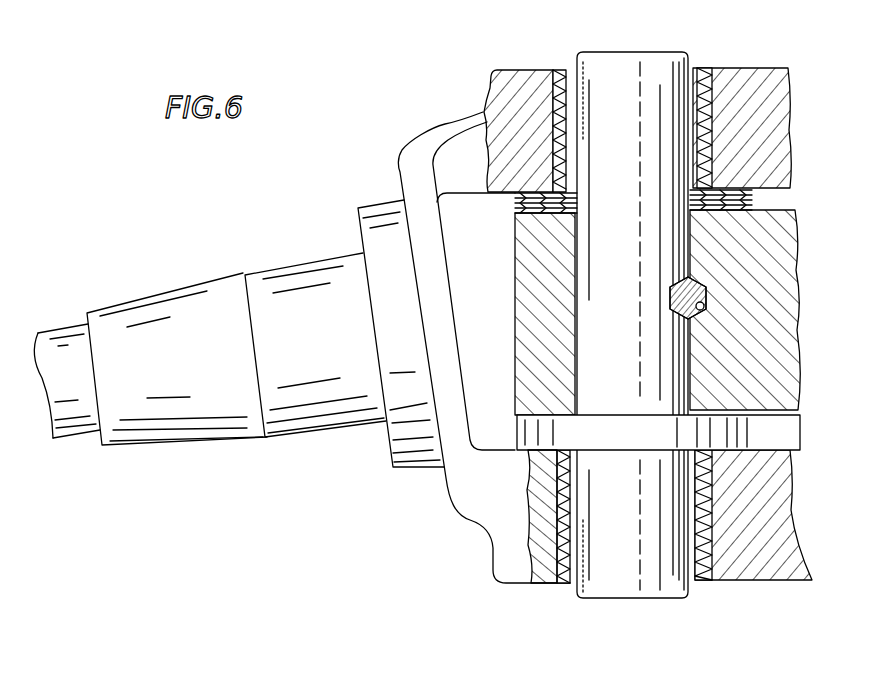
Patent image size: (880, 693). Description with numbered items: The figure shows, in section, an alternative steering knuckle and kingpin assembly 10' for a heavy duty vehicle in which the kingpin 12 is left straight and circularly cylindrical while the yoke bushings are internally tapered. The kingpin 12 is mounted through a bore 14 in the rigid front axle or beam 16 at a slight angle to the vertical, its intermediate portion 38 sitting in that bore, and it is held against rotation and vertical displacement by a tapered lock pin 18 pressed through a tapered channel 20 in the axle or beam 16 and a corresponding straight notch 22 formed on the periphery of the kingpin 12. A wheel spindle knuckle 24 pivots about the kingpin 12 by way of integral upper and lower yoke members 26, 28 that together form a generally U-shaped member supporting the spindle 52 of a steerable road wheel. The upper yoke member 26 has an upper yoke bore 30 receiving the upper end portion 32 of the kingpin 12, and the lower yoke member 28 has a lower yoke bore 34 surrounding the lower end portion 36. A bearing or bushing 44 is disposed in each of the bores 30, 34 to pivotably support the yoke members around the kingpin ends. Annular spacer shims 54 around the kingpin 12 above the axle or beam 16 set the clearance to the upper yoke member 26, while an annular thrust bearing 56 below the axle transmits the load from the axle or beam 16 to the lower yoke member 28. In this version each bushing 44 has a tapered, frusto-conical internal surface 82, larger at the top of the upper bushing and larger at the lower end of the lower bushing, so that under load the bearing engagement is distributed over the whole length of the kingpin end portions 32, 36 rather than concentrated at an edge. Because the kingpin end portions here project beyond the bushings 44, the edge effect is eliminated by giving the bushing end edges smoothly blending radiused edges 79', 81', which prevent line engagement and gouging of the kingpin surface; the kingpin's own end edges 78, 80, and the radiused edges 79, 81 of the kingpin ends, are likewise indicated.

The steering knuckle and kingpin assembly 10' is at (283, 184).
The kingpin 12 is at (567, 340).
The bore 14 is at (582, 382).
The front axle or beam 16 is at (790, 374).
The tapered lock pin 18 is at (706, 296).
The tapered channel 20 is at (703, 311).
The straight notch 22 is at (672, 298).
The wheel spindle knuckle 24 is at (451, 114).
The upper yoke member 26 is at (500, 71).
The lower yoke member 28 is at (522, 583).
The upper yoke bore 30 is at (552, 152).
The upper end portion of the kingpin 32 is at (684, 56).
The lower yoke bore 34 is at (560, 492).
The lower end portion of the kingpin 36 is at (673, 562).
The intermediate portion of the kingpin 38 is at (592, 293).
The bearing or bushing 44 is at (716, 162).
The spindle 52 is at (310, 430).
The annular spacer shims 54 is at (752, 200).
The annular thrust bearing 56 is at (748, 430).
The end edge of the kingpin upper end portion 78 is at (650, 52).
The radiused edge 79 is at (605, 43).
The radiused edge of the upper bushing 79' is at (565, 45).
The end edge of the kingpin lower end portion 80 is at (648, 600).
The radiused edge 81 is at (620, 616).
The radiused edge of the lower bushing 81' is at (567, 612).
The tapered internal surface 82 is at (568, 128).